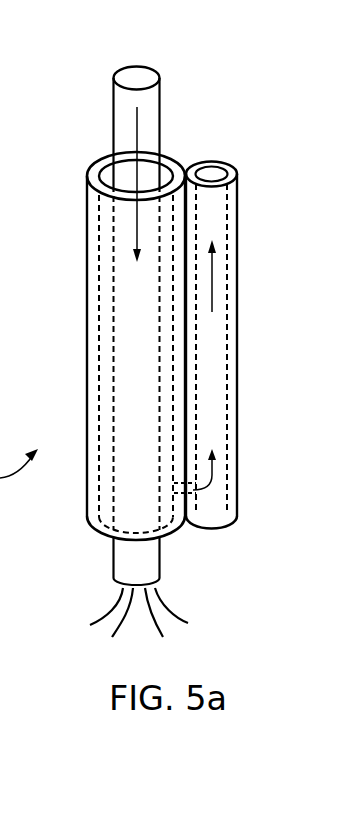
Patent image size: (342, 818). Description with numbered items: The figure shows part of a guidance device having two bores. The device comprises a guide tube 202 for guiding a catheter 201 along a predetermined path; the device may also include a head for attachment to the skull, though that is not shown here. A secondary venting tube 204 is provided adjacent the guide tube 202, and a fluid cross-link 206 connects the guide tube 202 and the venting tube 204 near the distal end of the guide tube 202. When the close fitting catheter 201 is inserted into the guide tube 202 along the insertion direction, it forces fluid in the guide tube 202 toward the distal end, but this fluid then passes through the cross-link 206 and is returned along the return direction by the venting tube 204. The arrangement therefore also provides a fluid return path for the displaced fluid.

The catheter 201 is at (155, 69).
The guide tube 202 is at (148, 172).
The secondary venting tube 204 is at (237, 177).
The fluid cross-link 206 is at (193, 497).